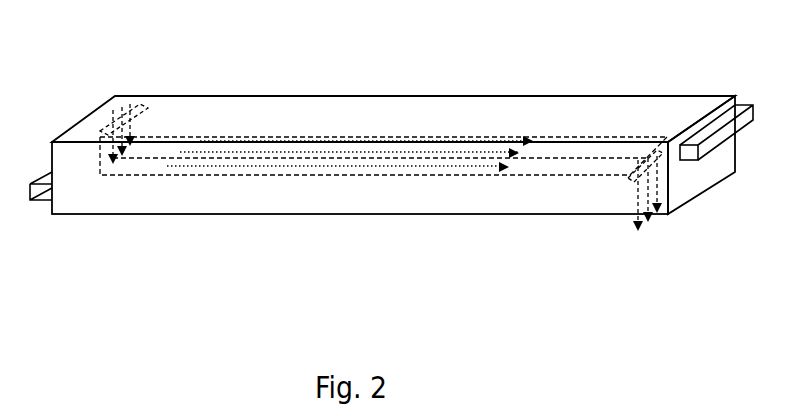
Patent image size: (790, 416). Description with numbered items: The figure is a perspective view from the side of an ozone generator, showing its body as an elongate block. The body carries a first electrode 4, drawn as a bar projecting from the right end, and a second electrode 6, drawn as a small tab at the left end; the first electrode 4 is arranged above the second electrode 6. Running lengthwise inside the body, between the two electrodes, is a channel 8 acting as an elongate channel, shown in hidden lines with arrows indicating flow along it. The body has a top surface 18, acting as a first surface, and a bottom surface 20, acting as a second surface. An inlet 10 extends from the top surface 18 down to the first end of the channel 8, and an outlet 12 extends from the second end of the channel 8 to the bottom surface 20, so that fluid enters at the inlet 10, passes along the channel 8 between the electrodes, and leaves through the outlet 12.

The first electrode 4 is at (752, 106).
The second electrode 6 is at (30, 200).
The channel 8 is at (577, 168).
The inlet 10 is at (133, 110).
The outlet 12 is at (636, 186).
The top surface 18 is at (375, 108).
The bottom surface 20 is at (388, 215).